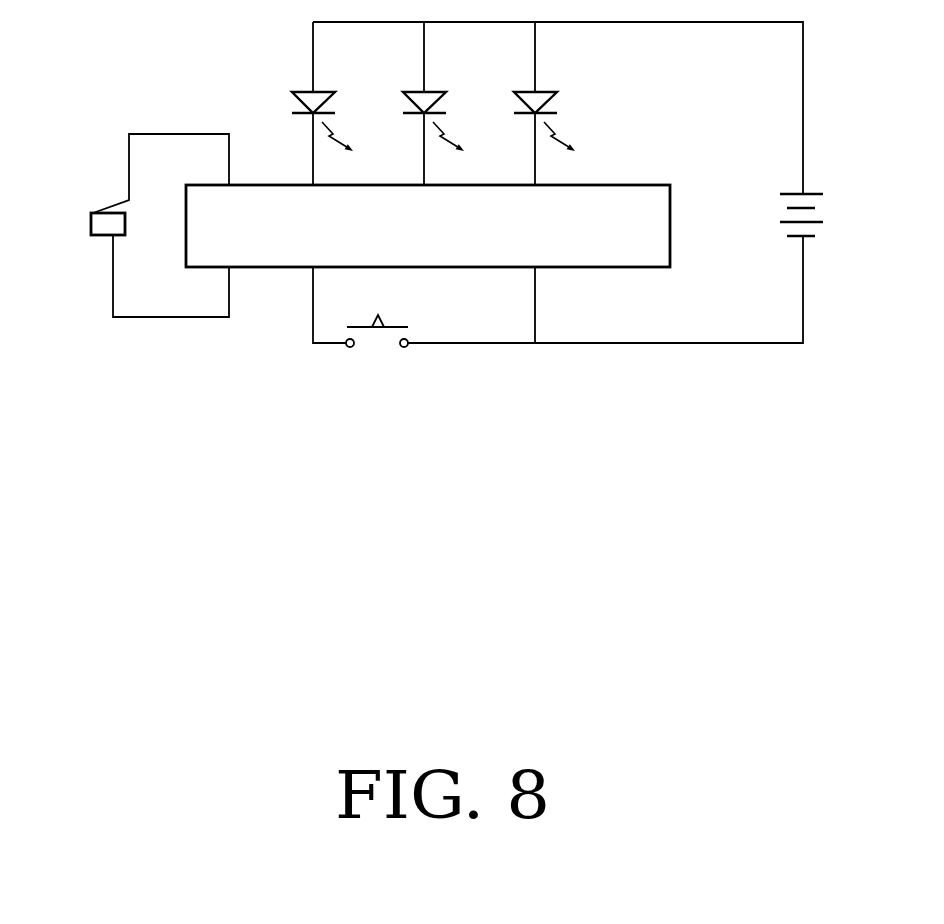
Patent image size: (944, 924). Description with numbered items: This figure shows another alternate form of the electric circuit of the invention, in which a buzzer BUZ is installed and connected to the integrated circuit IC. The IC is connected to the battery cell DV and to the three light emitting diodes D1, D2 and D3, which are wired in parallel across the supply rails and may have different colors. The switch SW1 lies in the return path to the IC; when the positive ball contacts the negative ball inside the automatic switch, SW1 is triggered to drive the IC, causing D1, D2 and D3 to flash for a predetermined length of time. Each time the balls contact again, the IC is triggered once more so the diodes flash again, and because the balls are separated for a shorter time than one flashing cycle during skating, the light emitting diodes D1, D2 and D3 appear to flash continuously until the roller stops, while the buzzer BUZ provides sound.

The element IC is at (428, 226).
The buzzer BUZ is at (79, 243).
The element SW1 is at (403, 317).
The battery cell DV is at (827, 215).
The light emitting diode D1 is at (327, 99).
The light emitting diode D2 is at (437, 98).
The light emitting diode D3 is at (550, 99).